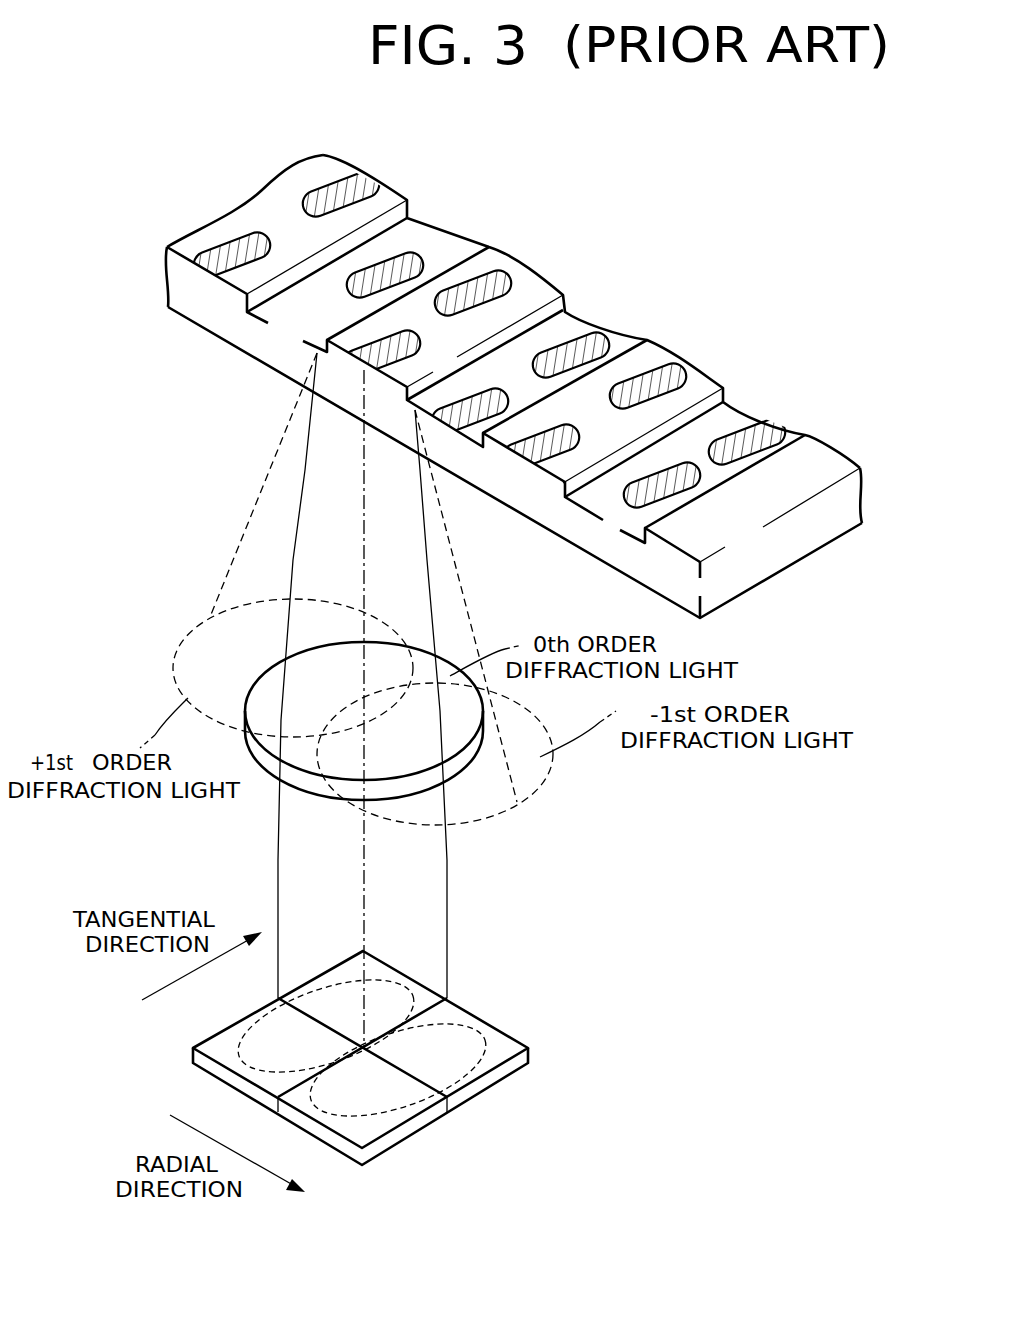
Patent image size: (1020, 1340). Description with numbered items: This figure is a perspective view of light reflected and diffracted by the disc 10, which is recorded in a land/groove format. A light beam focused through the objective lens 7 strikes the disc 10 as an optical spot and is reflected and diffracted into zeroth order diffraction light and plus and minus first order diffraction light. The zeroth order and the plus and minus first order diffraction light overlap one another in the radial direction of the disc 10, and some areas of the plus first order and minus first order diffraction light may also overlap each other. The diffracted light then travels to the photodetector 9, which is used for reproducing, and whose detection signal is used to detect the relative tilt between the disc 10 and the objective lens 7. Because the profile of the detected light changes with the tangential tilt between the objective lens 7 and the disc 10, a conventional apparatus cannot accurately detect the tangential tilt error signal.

The disc 10 is at (750, 577).
The objective lens 7 is at (268, 772).
The photodetector 9 is at (360, 1061).